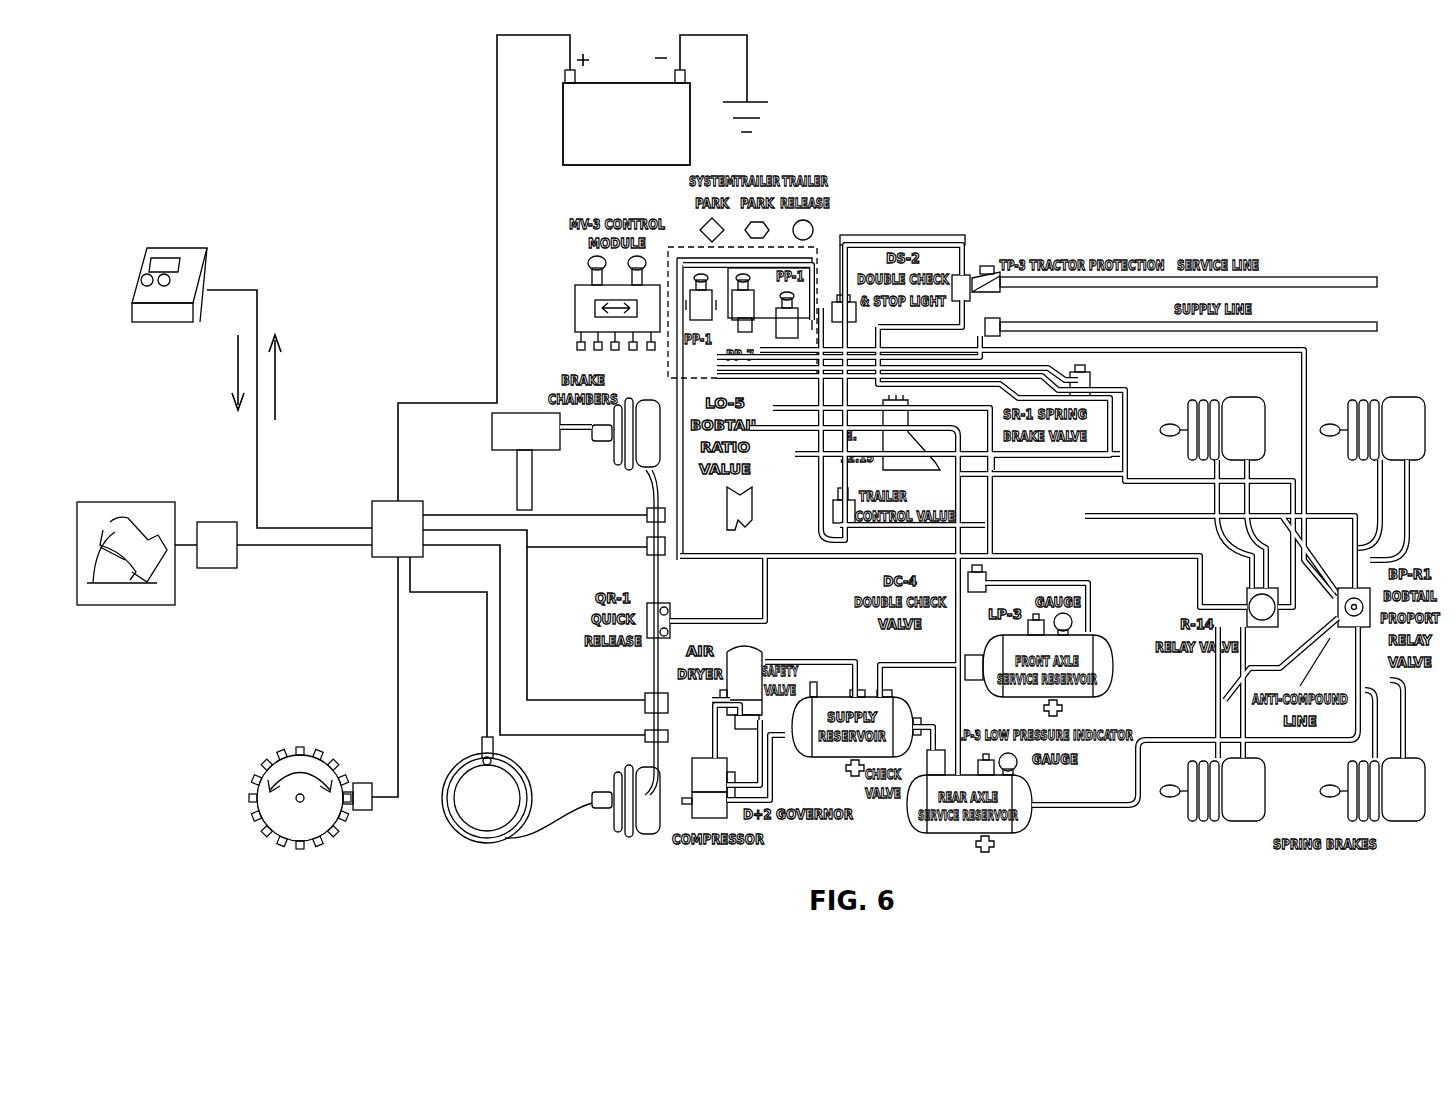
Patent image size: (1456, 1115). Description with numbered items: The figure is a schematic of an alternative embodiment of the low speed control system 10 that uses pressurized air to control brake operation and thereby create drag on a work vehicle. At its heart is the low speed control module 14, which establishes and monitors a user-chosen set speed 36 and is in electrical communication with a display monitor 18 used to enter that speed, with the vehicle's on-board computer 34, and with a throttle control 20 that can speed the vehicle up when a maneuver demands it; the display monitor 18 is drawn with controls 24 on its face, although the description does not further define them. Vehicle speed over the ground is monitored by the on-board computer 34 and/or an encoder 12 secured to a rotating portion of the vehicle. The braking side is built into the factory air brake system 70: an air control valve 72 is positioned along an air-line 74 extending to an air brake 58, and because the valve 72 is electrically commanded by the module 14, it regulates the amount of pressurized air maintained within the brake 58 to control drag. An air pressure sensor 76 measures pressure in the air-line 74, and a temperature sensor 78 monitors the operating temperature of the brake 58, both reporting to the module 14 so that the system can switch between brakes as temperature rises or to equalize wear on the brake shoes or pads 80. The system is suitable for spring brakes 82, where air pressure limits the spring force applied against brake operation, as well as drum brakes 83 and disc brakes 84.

The low speed control system 10 is at (344, 250).
The encoder 12 is at (268, 830).
The low speed control module 14 is at (372, 517).
The display monitor 18 is at (154, 263).
The throttle control 20 is at (121, 500).
The buttons 24 is at (141, 279).
The on-board computer 34 is at (213, 520).
The set speed 36 is at (157, 257).
The air brake 58 is at (466, 817).
The factory air brake system 70 is at (935, 117).
The air control valve 72 is at (647, 548).
The air-line 74 is at (651, 668).
The air pressure sensor 76 is at (647, 512).
The temperature sensor 78 is at (481, 748).
The brake shoes or pads 80 is at (502, 838).
The spring brakes 82 is at (1263, 804).
The drum brakes 83 is at (487, 846).
The disc brakes 84 is at (516, 412).